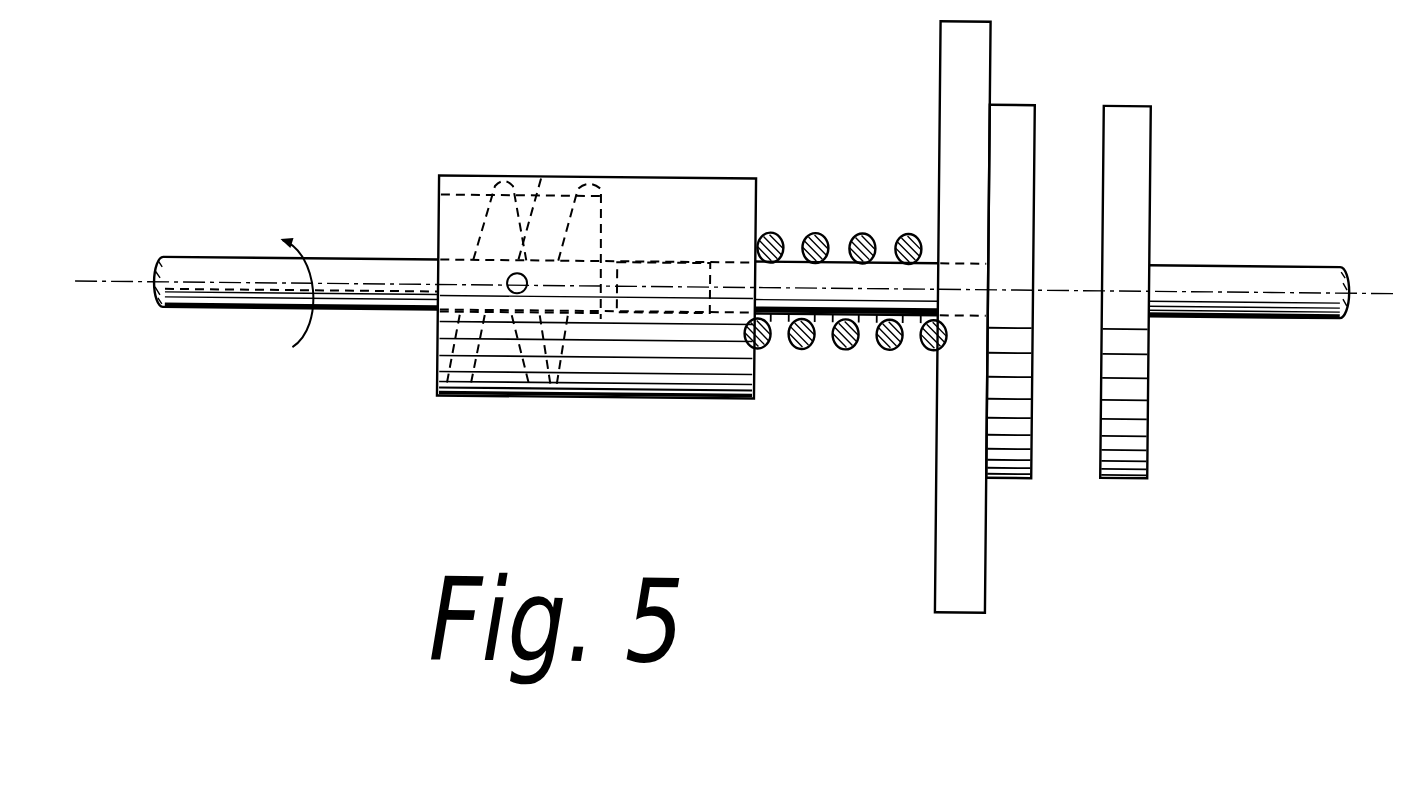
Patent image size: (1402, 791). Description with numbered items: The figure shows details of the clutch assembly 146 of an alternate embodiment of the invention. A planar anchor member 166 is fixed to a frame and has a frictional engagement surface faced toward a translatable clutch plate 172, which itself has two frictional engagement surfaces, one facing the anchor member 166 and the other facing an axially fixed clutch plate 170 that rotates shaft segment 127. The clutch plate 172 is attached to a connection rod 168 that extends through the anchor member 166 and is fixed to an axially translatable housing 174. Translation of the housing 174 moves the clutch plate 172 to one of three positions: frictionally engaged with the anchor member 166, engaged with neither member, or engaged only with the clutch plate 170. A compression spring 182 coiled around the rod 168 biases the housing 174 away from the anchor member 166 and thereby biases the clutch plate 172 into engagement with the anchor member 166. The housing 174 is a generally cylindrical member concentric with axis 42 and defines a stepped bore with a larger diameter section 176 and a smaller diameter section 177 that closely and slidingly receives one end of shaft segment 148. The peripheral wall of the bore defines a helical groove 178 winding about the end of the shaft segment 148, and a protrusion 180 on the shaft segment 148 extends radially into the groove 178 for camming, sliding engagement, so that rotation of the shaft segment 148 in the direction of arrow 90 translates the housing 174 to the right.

The axis 42 is at (85, 287).
The arrow 90 is at (313, 268).
The shaft segment 148 is at (246, 301).
The housing 174 is at (702, 367).
The larger diameter section 176 is at (472, 197).
The helical groove 178 is at (540, 182).
The smaller diameter section 177 is at (670, 262).
The protrusion 180 is at (513, 294).
The clutch assembly 146 is at (784, 149).
The connection rod 168 is at (856, 268).
The compression spring 182 is at (885, 344).
The anchor member 166 is at (962, 577).
The clutch plate 172 is at (1022, 114).
The clutch plate 170 is at (1137, 108).
The shaft segment 127 is at (1310, 266).